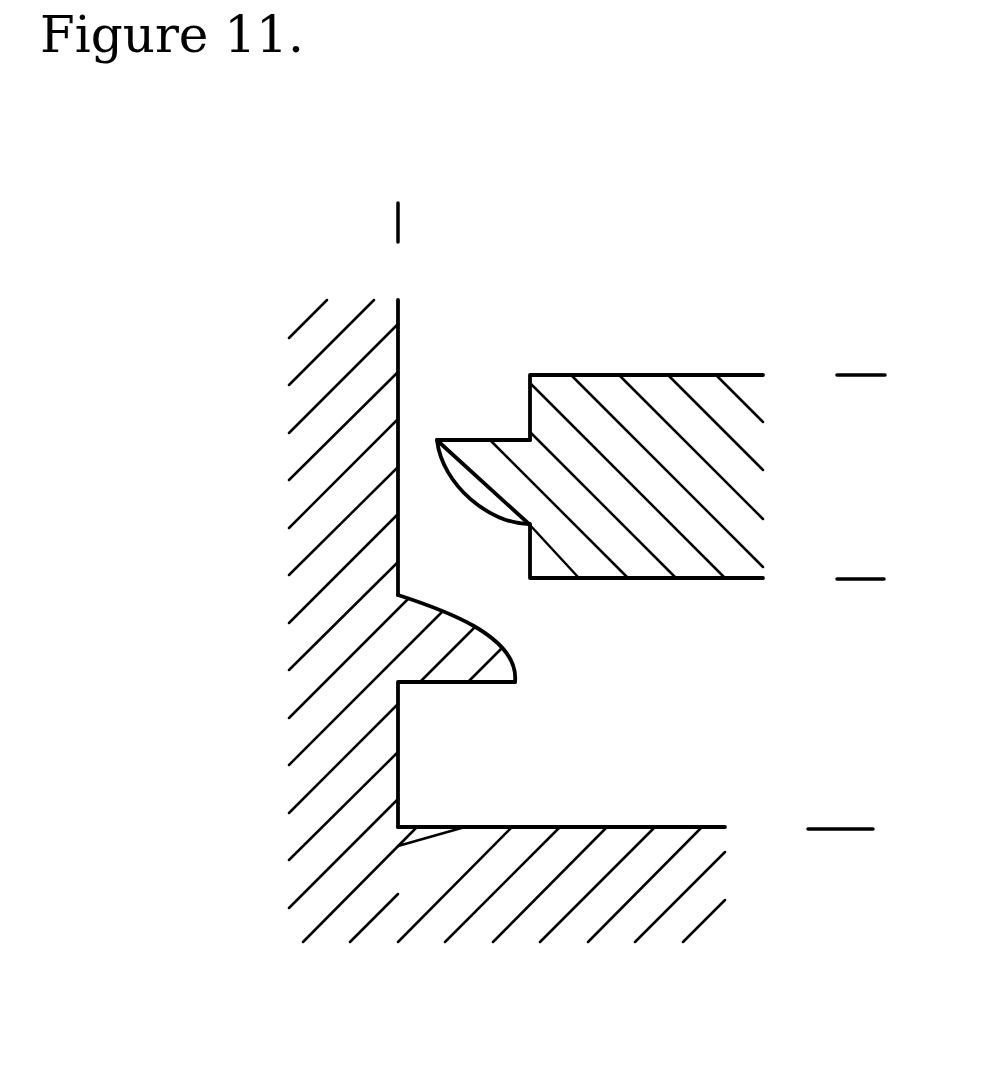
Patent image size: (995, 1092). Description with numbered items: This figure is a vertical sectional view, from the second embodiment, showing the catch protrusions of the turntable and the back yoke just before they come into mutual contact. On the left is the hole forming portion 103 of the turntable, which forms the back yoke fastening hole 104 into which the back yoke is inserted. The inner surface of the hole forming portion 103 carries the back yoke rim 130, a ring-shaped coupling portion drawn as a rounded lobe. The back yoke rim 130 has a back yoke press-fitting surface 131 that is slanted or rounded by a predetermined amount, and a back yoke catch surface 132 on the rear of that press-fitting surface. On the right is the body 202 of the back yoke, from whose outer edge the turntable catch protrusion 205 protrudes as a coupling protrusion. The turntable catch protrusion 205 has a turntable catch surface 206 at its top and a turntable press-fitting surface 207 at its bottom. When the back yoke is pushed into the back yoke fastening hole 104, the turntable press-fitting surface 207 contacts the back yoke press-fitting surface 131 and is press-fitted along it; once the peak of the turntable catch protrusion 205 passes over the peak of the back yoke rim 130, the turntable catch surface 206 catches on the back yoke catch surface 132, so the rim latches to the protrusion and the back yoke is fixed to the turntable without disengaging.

The hole forming portion 103 is at (322, 567).
The back yoke fastening hole 104 is at (578, 744).
The back yoke rim 130 is at (443, 652).
The back yoke press-fitting surface 131 is at (480, 633).
The back yoke catch surface 132 is at (457, 685).
The body 202 is at (490, 407).
The turntable catch protrusion 205 is at (417, 393).
The turntable catch surface 206 is at (463, 438).
The turntable press-fitting surface 207 is at (480, 503).